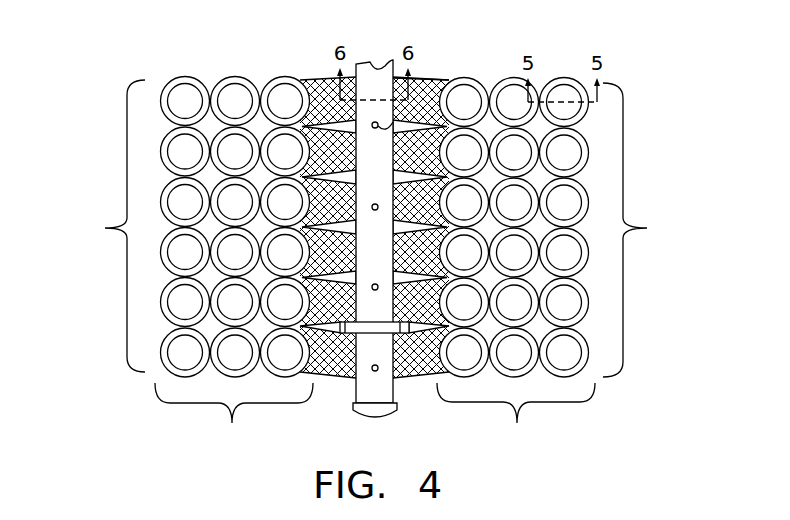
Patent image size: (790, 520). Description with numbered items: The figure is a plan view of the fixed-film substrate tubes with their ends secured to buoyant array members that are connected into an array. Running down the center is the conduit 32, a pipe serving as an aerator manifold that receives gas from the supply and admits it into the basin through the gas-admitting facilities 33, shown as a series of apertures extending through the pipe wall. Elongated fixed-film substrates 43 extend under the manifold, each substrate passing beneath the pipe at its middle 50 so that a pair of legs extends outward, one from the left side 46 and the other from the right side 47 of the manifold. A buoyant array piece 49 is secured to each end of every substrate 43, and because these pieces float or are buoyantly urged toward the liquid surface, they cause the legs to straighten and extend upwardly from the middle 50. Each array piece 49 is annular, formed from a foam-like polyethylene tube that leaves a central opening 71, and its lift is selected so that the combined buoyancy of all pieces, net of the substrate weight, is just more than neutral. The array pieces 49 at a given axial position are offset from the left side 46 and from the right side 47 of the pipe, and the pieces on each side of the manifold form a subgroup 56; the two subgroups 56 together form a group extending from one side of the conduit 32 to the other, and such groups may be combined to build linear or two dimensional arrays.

The conduit 32 is at (365, 68).
The gas-admitting facilities 33 is at (432, 80).
The elongated fixed-film substrate 43 is at (332, 80).
The left side 46 is at (262, 438).
The right side 47 is at (490, 447).
The buoyant array piece 49 is at (188, 91).
The middle 50 is at (345, 383).
The subgroup 56 is at (104, 226).
The opening 71 is at (564, 200).